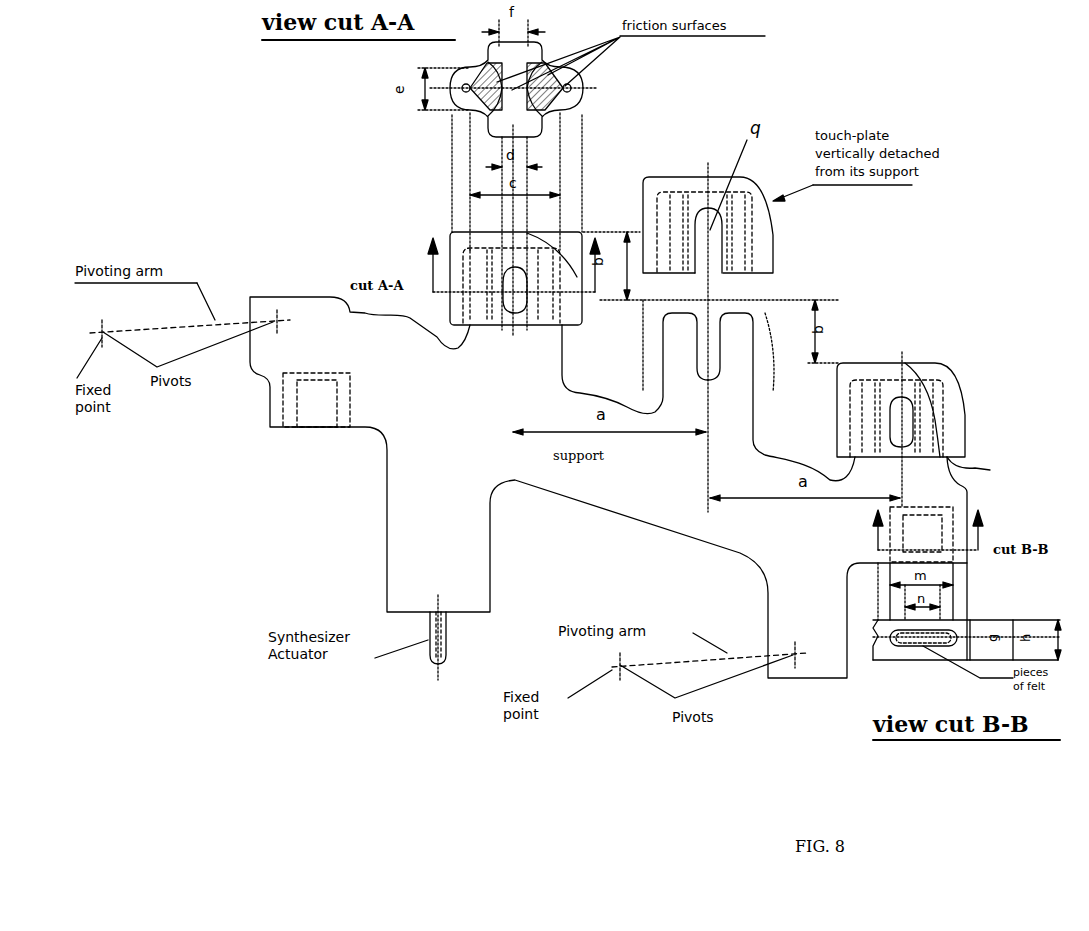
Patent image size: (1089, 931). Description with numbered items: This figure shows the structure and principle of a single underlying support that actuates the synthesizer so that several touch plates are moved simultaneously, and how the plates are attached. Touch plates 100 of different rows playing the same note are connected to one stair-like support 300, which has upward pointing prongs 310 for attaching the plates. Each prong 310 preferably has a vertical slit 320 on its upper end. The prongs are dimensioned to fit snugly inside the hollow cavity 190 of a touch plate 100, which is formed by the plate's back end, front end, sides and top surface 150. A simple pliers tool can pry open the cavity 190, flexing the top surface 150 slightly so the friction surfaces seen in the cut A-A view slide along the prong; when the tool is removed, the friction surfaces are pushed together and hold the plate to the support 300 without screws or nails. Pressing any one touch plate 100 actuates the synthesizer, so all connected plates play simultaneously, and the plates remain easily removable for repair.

The touch plate 100 is at (650, 176).
The top surface 150 is at (922, 362).
The hollow cavity 190 is at (760, 383).
The support 300 is at (420, 505).
The prong 310 is at (940, 263).
The vertical slit 320 is at (693, 340).